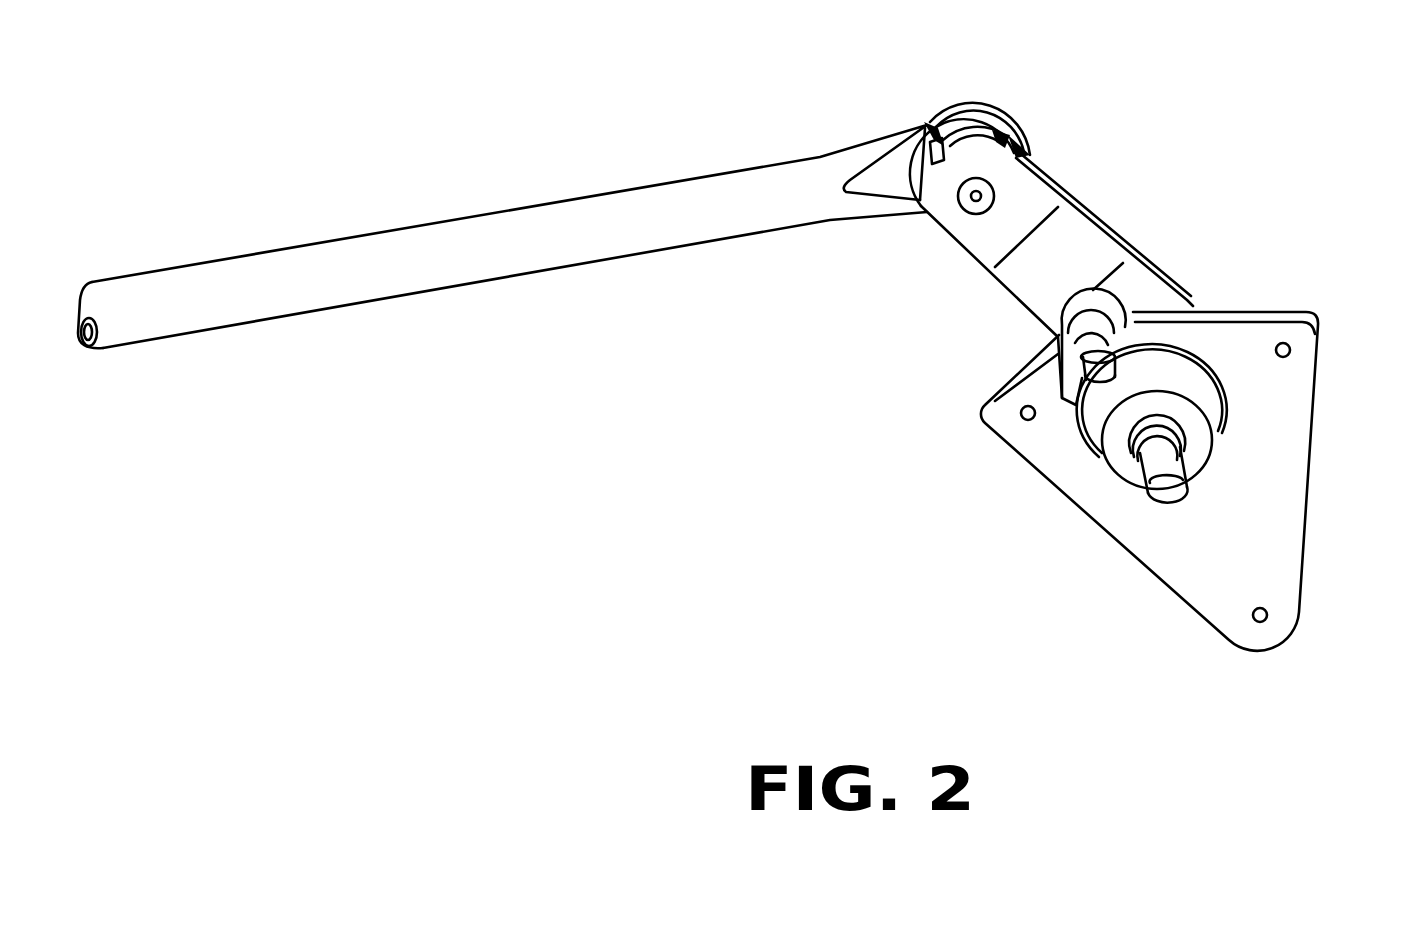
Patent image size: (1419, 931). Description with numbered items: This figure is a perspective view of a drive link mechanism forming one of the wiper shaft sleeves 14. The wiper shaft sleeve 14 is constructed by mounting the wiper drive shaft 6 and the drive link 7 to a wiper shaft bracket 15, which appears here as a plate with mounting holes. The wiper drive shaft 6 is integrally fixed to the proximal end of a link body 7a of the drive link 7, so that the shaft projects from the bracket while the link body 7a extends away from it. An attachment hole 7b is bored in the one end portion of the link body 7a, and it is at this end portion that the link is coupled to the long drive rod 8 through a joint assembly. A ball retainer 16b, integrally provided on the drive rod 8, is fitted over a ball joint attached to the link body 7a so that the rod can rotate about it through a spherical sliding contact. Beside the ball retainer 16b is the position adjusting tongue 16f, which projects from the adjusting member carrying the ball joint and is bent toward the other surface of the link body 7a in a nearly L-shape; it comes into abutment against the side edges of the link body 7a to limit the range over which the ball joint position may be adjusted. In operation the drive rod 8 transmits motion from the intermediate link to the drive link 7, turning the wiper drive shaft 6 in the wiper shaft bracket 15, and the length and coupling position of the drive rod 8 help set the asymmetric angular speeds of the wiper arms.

The wiper drive shaft 6 is at (1163, 492).
The drive link 7 is at (1063, 188).
The link body 7a is at (1083, 257).
The attachment hole 7b is at (970, 203).
The drive rod 8 is at (375, 257).
The wiper shaft sleeve 14 is at (1273, 544).
The wiper shaft bracket 15 is at (1268, 423).
The ball retainer 16b is at (978, 127).
The position adjusting tongue 16f is at (930, 127).